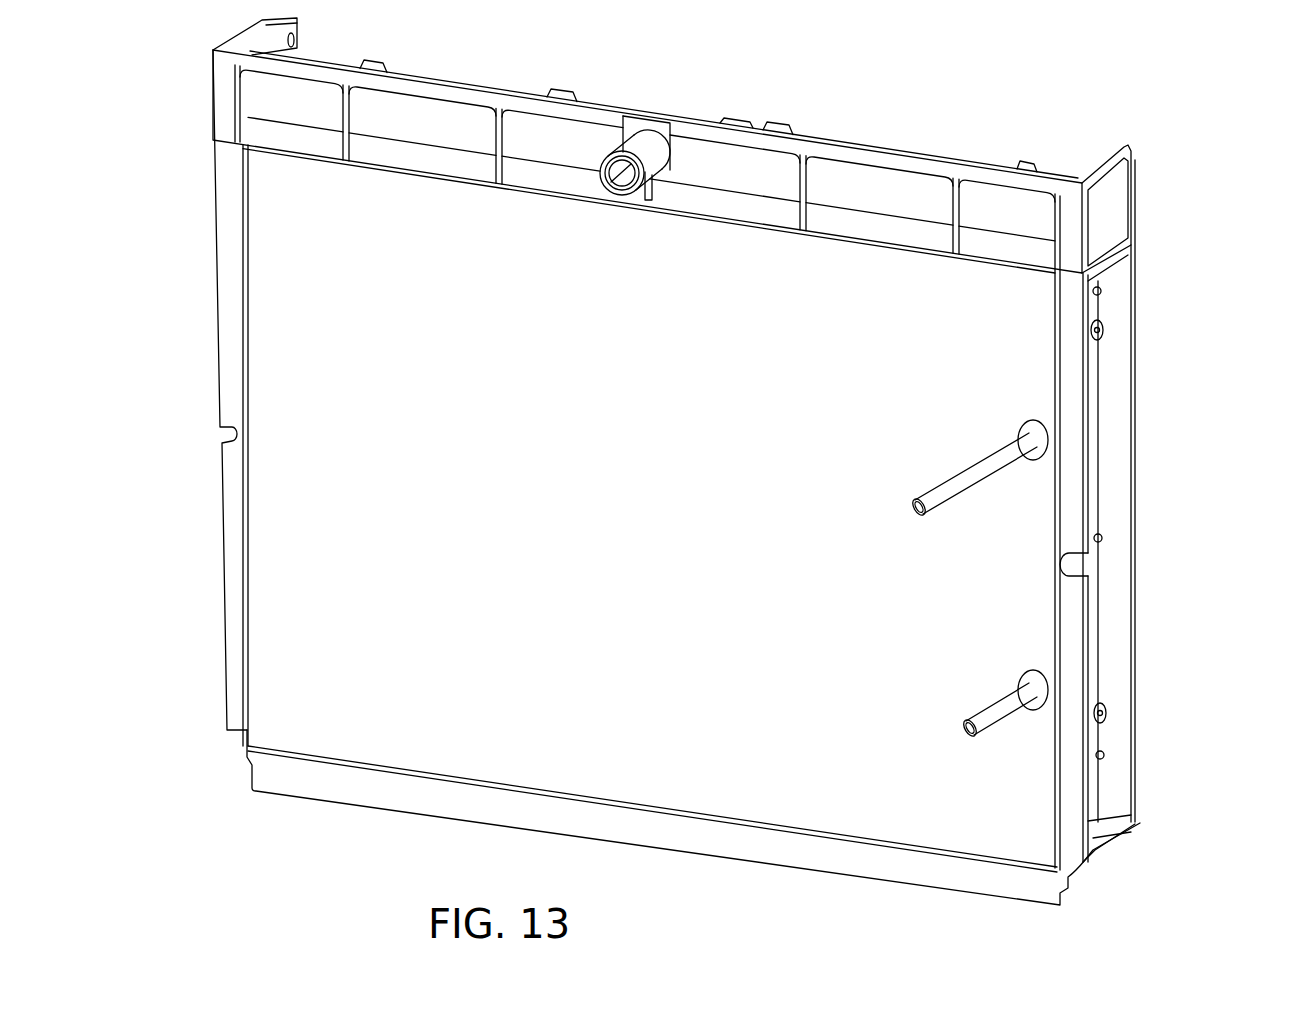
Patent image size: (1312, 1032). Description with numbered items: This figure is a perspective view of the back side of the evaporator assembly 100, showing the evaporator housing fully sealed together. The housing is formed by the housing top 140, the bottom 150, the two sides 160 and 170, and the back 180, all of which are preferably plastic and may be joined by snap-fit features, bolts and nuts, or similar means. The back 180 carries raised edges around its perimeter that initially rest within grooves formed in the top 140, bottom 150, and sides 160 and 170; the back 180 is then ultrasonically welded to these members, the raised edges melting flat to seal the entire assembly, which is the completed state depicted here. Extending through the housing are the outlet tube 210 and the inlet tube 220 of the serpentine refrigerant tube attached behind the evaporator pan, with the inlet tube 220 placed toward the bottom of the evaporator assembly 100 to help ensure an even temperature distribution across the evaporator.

The evaporator assembly 100 is at (1247, 713).
The housing top 140 is at (903, 185).
The bottom 150 is at (565, 815).
The side 160 is at (228, 378).
The side 170 is at (1115, 498).
The back 180 is at (930, 385).
The outlet tube 210 is at (1022, 685).
The inlet tube 220 is at (1020, 435).